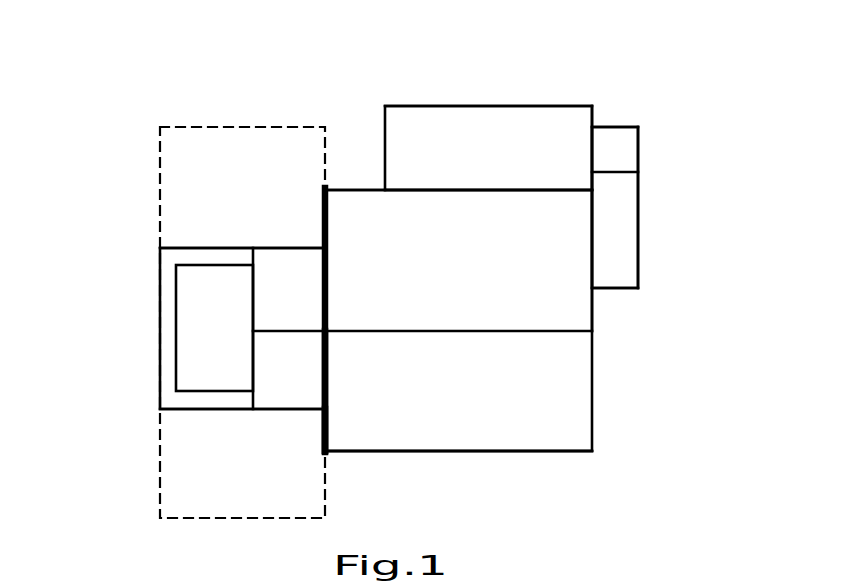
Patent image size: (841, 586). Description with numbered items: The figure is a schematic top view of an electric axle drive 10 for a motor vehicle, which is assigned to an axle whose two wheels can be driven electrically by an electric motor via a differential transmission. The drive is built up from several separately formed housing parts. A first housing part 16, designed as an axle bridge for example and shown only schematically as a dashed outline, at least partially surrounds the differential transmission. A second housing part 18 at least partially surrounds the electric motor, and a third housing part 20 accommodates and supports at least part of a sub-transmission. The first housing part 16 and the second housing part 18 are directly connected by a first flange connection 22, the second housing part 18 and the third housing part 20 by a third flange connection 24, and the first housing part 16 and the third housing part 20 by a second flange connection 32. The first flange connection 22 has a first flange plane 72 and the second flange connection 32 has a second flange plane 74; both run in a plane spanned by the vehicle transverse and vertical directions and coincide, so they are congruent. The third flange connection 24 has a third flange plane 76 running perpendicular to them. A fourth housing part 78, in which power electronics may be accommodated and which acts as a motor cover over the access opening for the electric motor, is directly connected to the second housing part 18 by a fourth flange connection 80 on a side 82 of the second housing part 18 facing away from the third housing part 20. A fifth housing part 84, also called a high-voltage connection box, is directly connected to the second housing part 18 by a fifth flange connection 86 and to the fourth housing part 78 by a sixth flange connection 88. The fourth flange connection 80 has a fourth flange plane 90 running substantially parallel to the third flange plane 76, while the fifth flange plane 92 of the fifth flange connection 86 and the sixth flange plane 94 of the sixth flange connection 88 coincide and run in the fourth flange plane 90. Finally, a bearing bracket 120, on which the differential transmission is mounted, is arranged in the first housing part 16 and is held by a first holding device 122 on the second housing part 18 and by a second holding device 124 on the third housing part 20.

The electric axle drive 10 is at (609, 85).
The first housing part 16 is at (160, 477).
The second housing part 18 is at (593, 320).
The third housing part 20 is at (594, 415).
The first flange connection 22 is at (331, 173).
The third flange connection 24 is at (456, 315).
The second flange connection 32 is at (342, 387).
The first flange plane 72 is at (328, 230).
The second flange plane 74 is at (328, 427).
The third flange plane 76 is at (525, 333).
The fourth housing part 78 is at (485, 106).
The fourth flange connection 80 is at (508, 177).
The side 82 is at (585, 72).
The fifth housing part 84 is at (640, 197).
The fifth flange connection 86 is at (608, 254).
The sixth flange connection 88 is at (612, 146).
The fourth flange plane 90 is at (540, 192).
The fifth flange plane 92 is at (592, 283).
The sixth flange plane 94 is at (592, 172).
The bearing bracket 120 is at (160, 357).
The first holding device 122 is at (241, 229).
The second holding device 124 is at (241, 427).